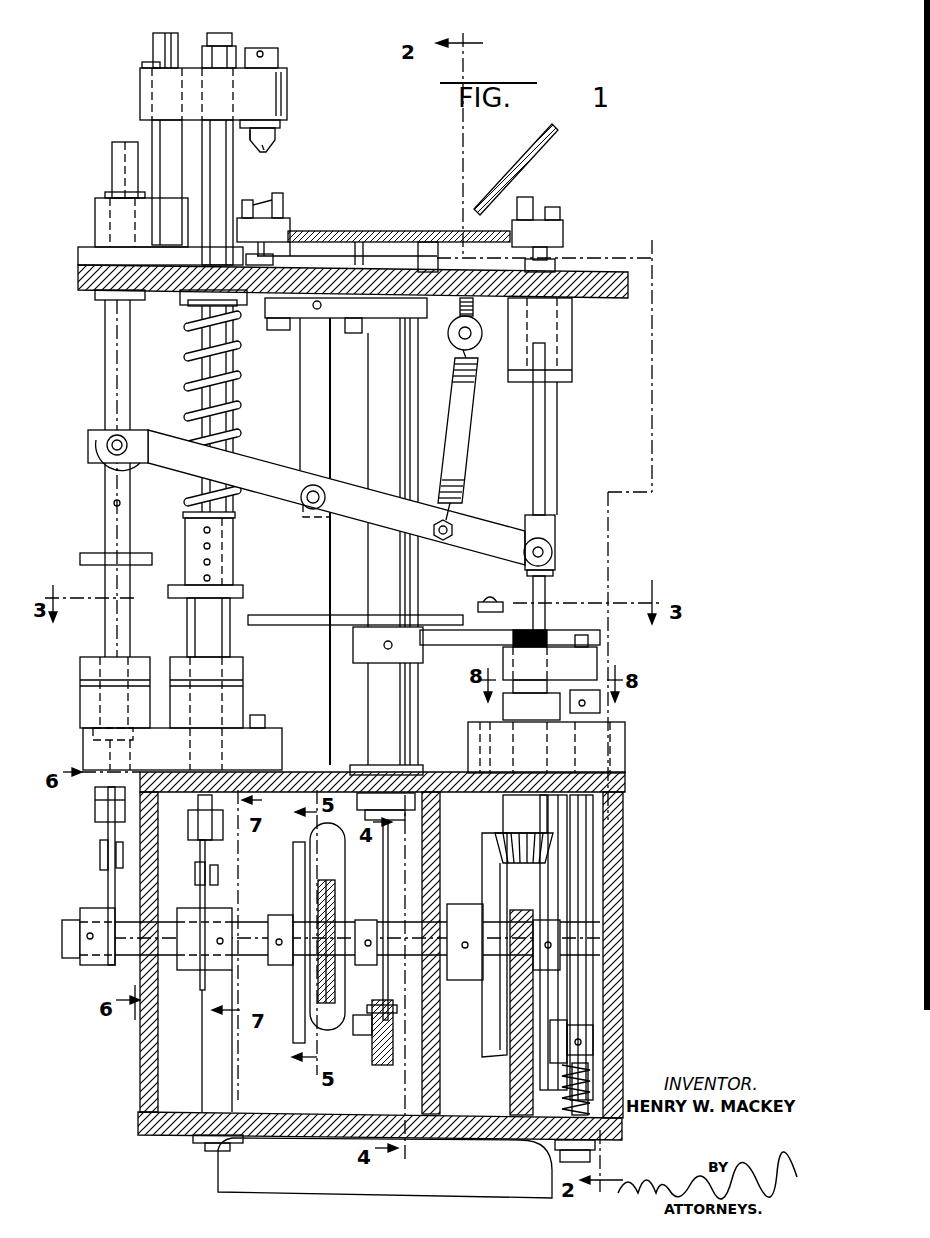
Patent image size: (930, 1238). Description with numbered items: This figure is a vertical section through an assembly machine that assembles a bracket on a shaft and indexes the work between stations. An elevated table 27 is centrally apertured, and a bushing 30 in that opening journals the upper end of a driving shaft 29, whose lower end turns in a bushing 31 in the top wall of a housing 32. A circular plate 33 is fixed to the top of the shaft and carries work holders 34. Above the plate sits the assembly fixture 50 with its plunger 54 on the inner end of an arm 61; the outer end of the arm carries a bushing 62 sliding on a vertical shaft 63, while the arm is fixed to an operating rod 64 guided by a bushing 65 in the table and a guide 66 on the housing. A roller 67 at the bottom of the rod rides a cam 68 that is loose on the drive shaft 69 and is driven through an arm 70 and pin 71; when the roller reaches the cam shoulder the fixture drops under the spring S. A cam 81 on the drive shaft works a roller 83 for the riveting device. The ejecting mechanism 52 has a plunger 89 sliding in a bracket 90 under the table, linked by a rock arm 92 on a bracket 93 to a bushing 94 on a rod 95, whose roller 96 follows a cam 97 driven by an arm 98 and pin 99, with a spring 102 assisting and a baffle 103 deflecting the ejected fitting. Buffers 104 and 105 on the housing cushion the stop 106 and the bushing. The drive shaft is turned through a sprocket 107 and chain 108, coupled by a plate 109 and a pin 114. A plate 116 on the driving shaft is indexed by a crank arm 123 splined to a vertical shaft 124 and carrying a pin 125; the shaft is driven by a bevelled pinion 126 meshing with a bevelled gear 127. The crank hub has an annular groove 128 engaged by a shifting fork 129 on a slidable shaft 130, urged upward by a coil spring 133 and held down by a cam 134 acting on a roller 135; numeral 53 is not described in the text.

The elevated table 27 is at (628, 296).
The driving shaft 29 is at (378, 395).
The bushing 30 is at (383, 313).
The bushing 31 is at (355, 770).
The housing 32 is at (623, 875).
The circular plate 33 is at (336, 232).
The work holders 34 is at (284, 214).
The assembly fixture 50 is at (280, 138).
The ejecting mechanism 52 is at (548, 422).
The nozzle body 53 is at (252, 138).
The plunger 54 is at (262, 152).
The arm 61 is at (282, 85).
The bushing 62 is at (205, 62).
The vertical shaft 63 is at (160, 42).
The operating rod 64 is at (190, 348).
The bushing 65 is at (188, 308).
The guide 66 is at (238, 718).
The roller 67 is at (205, 832).
The cam 68 is at (200, 982).
The drive shaft 69 is at (72, 950).
The arm 70 is at (218, 907).
The pin 71 is at (218, 878).
The cam 81 is at (396, 896).
The roller 83 is at (375, 1035).
The plunger 89 is at (540, 475).
The bracket 90 is at (572, 345).
The rock arm 92 is at (476, 525).
The bracket 93 is at (310, 408).
The bushing 94 is at (130, 498).
The rod 95 is at (112, 408).
The roller 96 is at (108, 814).
The cam 97 is at (110, 885).
The arm 98 is at (100, 895).
The pin 99 is at (100, 852).
The spring 102 is at (462, 440).
The baffle 103 is at (535, 152).
The buffer 104 is at (240, 676).
The buffer 105 is at (88, 672).
The vertically adjustable stop 106 is at (230, 570).
The sprocket 107 is at (335, 915).
The chain 108 is at (330, 975).
The plate 109 is at (295, 1007).
The pin 114 is at (316, 895).
The plate 116 is at (296, 618).
The crank arm 123 is at (597, 663).
The vertical shaft 124 is at (530, 642).
The pin 125 is at (588, 641).
The bevelled pinion 126 is at (553, 845).
The bevelled gear 127 is at (490, 1060).
The annular groove 128 is at (503, 700).
The shifting fork 129 is at (600, 705).
The vertically slidable shaft 130 is at (575, 925).
The coil spring 133 is at (590, 1085).
The cam 134 is at (562, 995).
The roller 135 is at (562, 1070).
The spring S is at (237, 382).